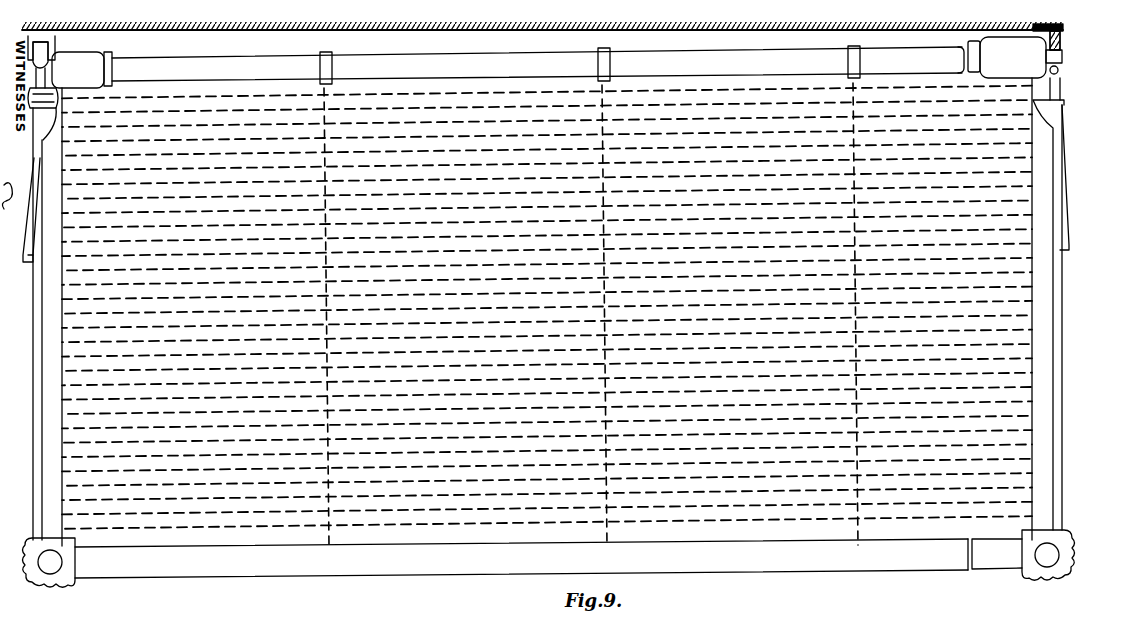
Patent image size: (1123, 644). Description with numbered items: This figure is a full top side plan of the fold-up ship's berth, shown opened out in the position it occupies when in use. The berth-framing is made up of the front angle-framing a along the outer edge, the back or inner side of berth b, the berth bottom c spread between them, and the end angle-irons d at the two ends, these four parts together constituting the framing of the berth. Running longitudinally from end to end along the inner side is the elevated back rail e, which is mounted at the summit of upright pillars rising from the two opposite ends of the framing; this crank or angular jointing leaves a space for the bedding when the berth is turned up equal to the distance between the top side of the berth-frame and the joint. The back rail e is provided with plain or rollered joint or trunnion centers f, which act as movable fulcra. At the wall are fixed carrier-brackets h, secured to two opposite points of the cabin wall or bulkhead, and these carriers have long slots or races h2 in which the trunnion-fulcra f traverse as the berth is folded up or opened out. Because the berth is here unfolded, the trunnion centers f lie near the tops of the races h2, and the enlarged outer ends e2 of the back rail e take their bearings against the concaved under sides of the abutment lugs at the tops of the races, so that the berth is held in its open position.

The front angle-framing a is at (518, 566).
The back or inner side of berth b is at (591, 314).
The berth bottom c is at (547, 312).
The end angle-irons d is at (40, 328).
The elevated back rail e is at (576, 58).
The enlarged outer ends of the back rail e2 is at (1007, 57).
The trunnion centers f is at (1062, 58).
The fixed carrier-brackets h is at (1062, 30).
The slots or races h2 is at (1062, 48).